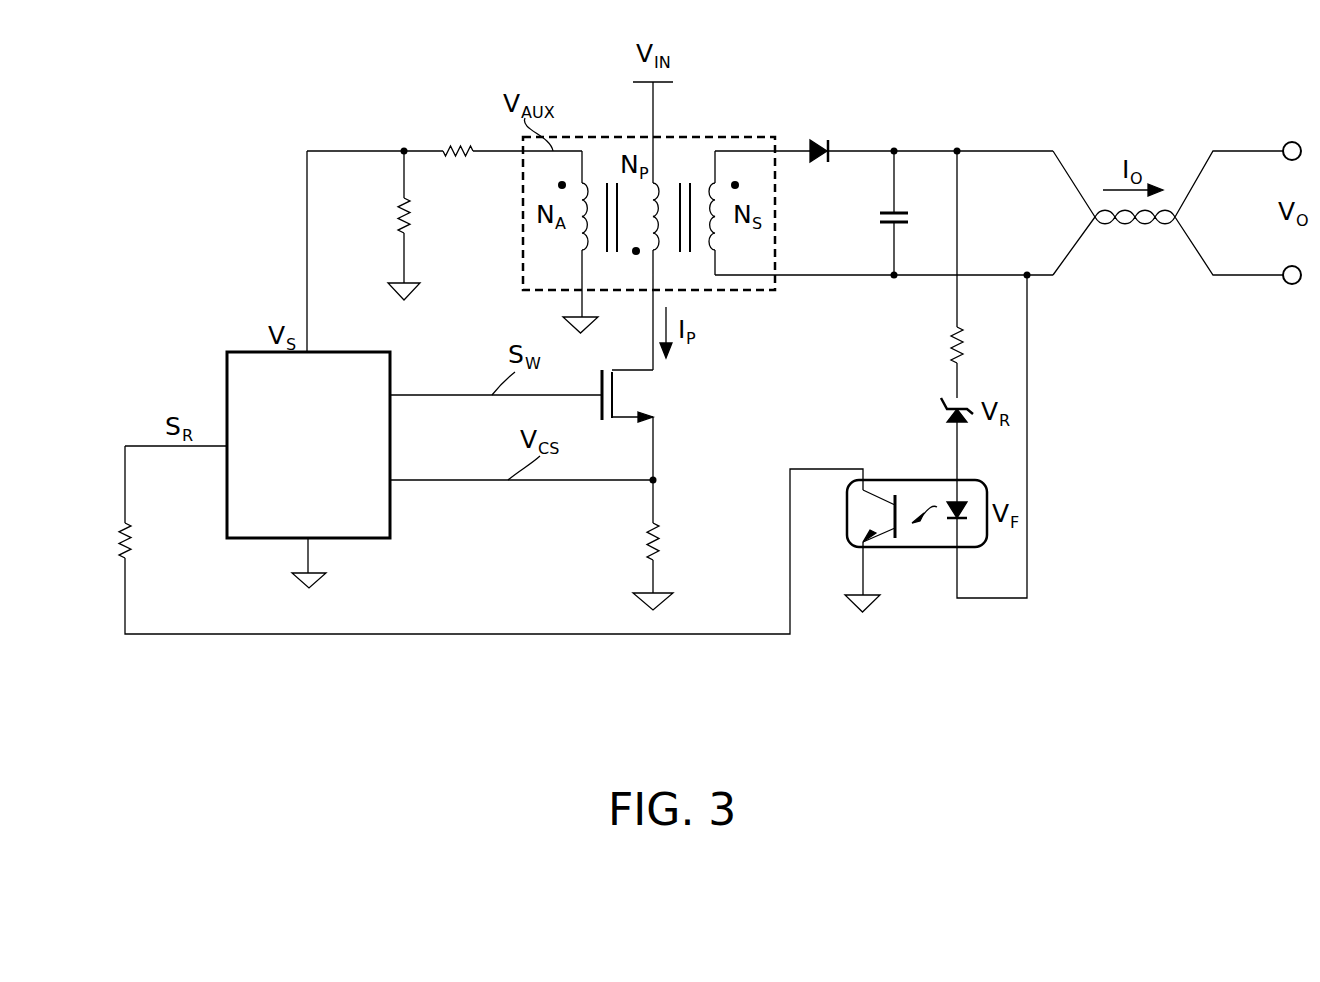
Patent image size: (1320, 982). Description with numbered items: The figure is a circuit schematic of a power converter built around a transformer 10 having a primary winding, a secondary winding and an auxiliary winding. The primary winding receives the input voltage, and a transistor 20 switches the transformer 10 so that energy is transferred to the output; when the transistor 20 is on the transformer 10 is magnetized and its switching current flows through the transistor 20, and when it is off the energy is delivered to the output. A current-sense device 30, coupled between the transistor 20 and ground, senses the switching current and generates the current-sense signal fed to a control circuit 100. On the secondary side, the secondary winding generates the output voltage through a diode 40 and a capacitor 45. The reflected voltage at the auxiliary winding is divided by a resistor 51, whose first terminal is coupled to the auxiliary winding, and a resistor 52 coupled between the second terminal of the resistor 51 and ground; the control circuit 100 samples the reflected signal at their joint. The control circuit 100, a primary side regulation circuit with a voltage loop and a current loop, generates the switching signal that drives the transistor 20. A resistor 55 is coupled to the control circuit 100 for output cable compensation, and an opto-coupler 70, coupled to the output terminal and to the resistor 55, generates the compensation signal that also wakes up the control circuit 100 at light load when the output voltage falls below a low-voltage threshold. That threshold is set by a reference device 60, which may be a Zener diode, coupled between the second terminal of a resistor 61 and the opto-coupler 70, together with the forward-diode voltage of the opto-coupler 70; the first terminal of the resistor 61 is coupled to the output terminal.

The transformer 10 is at (649, 197).
The transistor 20 is at (647, 396).
The current-sense device 30 is at (675, 541).
The diode 40 is at (819, 135).
The capacitor 45 is at (912, 219).
The resistor 51 is at (459, 134).
The resistor 52 is at (423, 217).
The resistor 55 is at (104, 540).
The reference device 60 is at (938, 412).
The resistor 61 is at (933, 345).
The opto-coupler 70 is at (917, 498).
The control circuit 100 is at (308, 430).